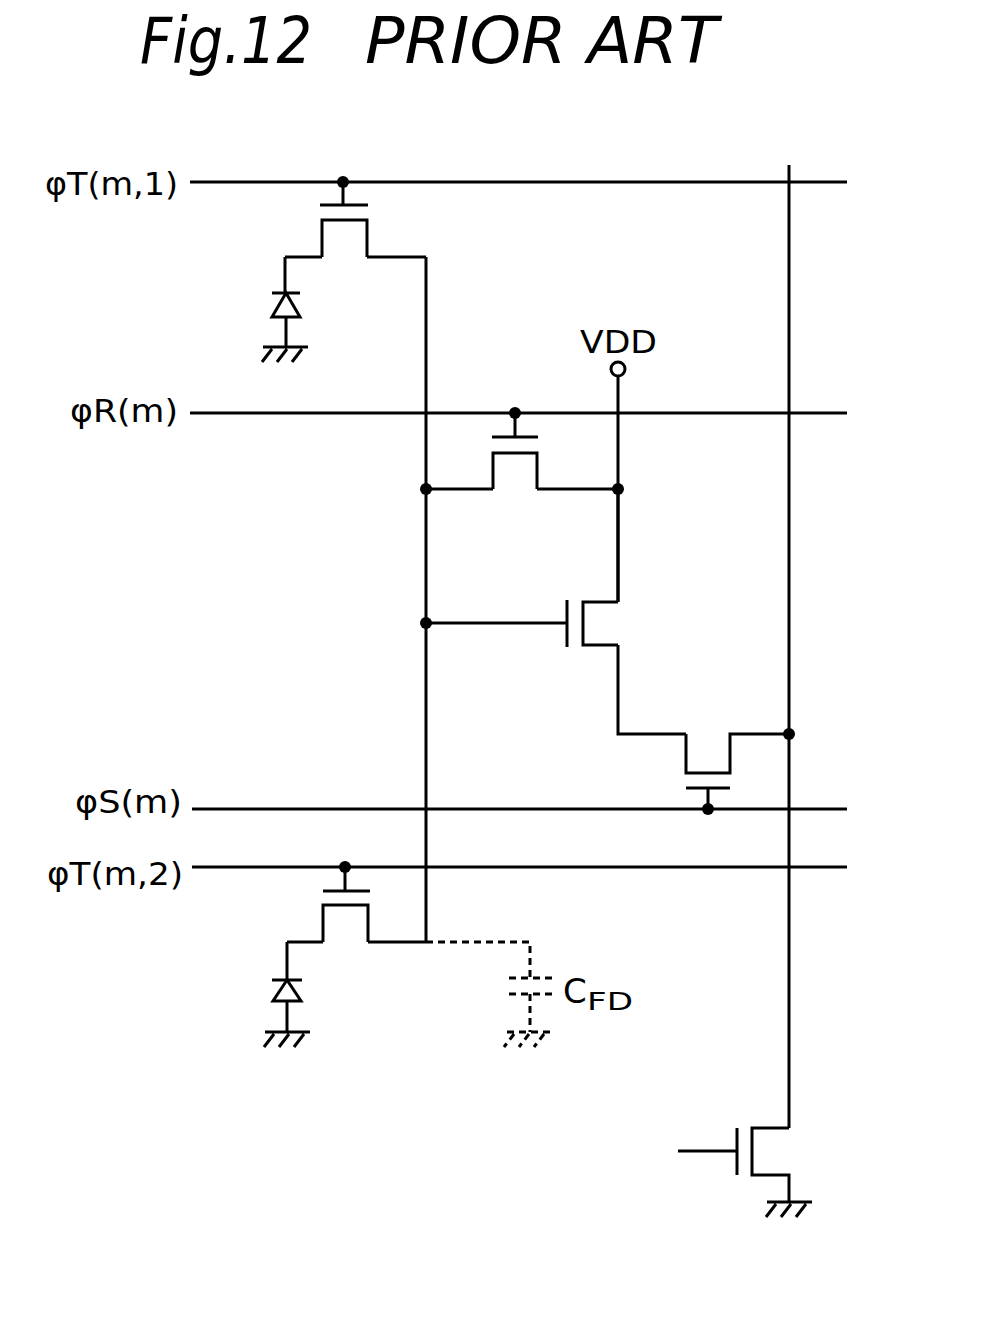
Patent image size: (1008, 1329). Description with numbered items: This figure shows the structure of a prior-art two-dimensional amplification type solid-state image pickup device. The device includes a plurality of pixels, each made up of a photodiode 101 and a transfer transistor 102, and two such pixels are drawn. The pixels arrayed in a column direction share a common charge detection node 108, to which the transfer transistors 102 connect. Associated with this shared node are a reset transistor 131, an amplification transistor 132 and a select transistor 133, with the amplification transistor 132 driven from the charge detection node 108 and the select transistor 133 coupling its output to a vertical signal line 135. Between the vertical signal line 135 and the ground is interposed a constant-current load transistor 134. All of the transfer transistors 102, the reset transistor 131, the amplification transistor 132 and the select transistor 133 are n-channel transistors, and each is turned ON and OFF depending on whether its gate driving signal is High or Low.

The photodiode 101 is at (270, 310).
The transfer transistor 102 is at (346, 220).
The charge detection node 108 is at (426, 779).
The reset transistor 131 is at (522, 455).
The amplification transistor 132 is at (587, 621).
The select transistor 133 is at (716, 770).
The constant-current load transistor 134 is at (760, 1153).
The vertical signal line 135 is at (790, 517).